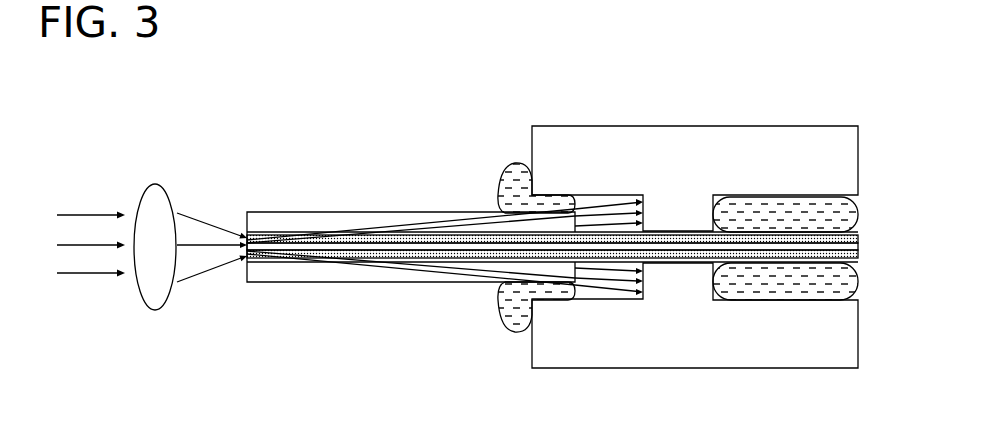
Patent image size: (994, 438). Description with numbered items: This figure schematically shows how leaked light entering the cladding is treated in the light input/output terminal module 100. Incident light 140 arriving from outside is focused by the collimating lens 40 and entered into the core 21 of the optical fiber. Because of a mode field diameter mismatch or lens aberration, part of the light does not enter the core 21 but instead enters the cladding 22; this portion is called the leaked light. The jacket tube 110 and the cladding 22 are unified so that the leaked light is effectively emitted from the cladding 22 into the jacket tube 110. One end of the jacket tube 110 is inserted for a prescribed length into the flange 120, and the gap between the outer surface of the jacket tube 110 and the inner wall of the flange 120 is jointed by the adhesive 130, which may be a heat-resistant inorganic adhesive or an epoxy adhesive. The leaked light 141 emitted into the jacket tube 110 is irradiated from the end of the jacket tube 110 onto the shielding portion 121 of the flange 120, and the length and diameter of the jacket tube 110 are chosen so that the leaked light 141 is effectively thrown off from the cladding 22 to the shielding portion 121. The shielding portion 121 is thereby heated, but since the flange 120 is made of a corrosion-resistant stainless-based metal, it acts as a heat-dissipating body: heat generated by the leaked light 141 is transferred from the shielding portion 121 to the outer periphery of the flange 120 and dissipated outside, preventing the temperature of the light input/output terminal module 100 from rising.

The light input/output terminal module 100 is at (552, 225).
The jacket tube 110 is at (440, 212).
The flange 120 is at (688, 140).
The shielding portion 121 is at (673, 270).
The adhesive 130 is at (507, 165).
The incident light 140 is at (90, 213).
The leaked light 141 is at (460, 268).
The core 21 is at (308, 248).
The cladding 22 is at (367, 258).
The collimating lens 40 is at (152, 295).